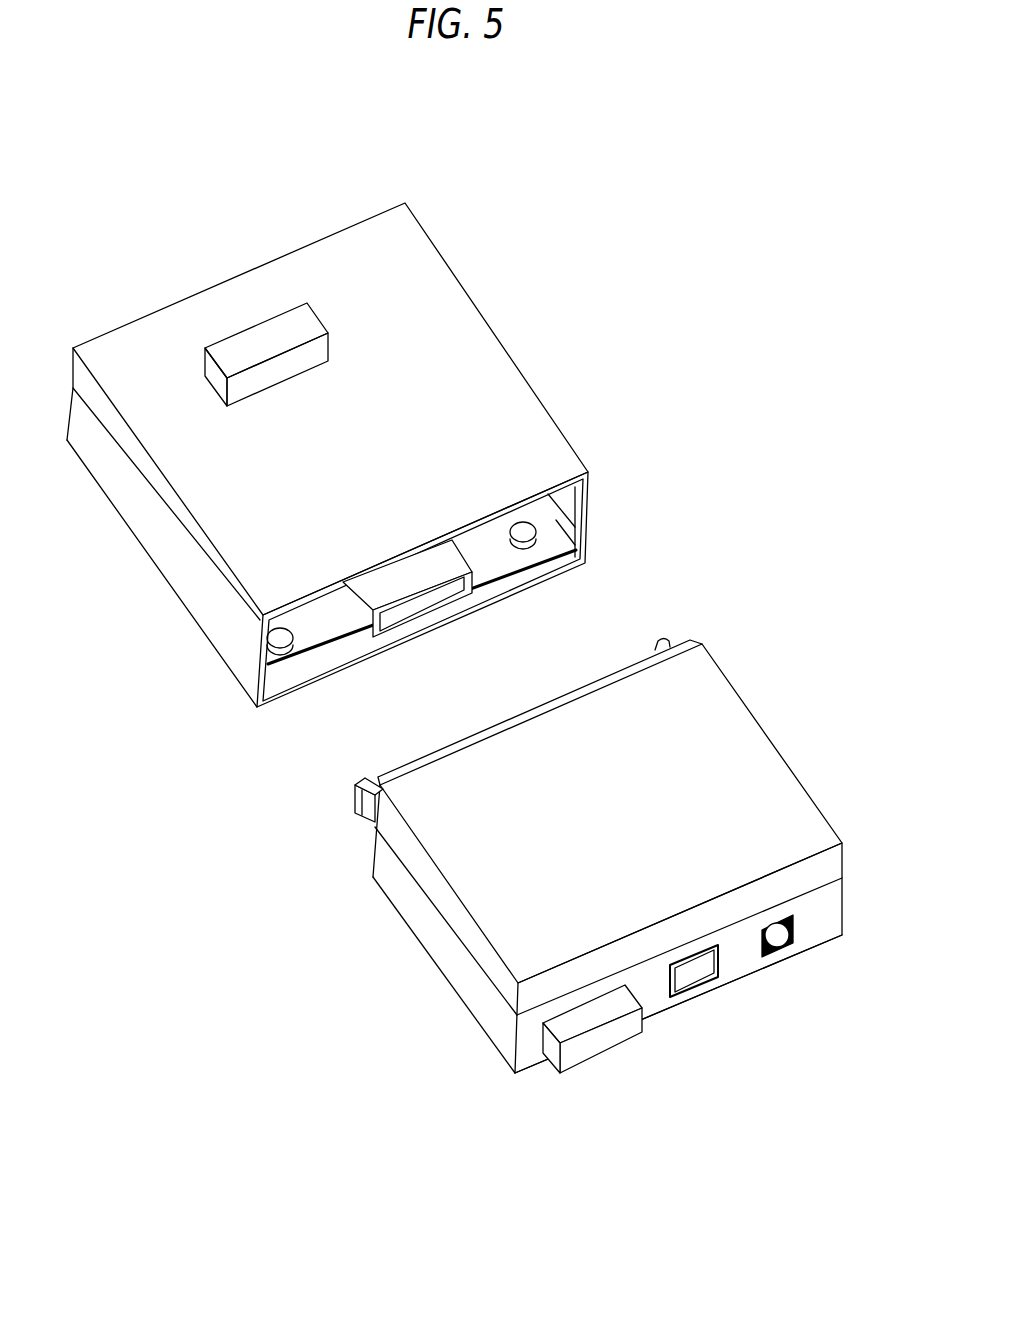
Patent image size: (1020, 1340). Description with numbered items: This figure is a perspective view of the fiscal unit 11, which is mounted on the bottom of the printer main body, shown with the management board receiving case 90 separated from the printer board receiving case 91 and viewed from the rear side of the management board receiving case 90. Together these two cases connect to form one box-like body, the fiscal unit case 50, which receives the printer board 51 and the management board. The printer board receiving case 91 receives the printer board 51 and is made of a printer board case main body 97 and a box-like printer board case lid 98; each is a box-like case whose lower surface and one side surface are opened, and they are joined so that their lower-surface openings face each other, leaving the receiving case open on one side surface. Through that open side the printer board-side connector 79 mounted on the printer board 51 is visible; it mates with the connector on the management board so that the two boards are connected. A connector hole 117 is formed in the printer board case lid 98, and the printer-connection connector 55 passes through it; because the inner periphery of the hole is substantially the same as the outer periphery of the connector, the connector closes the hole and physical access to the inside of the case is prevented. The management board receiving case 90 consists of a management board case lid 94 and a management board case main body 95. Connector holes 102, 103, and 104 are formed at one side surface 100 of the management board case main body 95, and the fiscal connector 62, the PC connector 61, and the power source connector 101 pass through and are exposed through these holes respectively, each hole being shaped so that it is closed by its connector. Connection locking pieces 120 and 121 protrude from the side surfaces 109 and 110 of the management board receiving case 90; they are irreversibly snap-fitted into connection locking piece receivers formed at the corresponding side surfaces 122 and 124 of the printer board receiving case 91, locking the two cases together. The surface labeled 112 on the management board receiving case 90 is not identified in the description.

The fiscal unit 11 is at (503, 188).
The fiscal unit case 50 is at (747, 375).
The printer board receiving case 91 is at (513, 402).
The management board receiving case 90 is at (690, 710).
The printer-connection connector 55 is at (253, 318).
The connector hole 117 is at (290, 366).
The side surface 124 is at (580, 440).
The printer board case lid 98 is at (160, 490).
The printer board case main body 97 is at (185, 585).
The side surface 122 is at (238, 655).
The printer board 51 is at (308, 637).
The printer board-side connector 79 is at (412, 577).
The connection locking piece 121 is at (662, 640).
The side surface 110 is at (785, 765).
The side face 112 is at (450, 905).
The management board case lid 94 is at (430, 882).
The side surface 109 is at (445, 952).
The management board case main body 95 is at (493, 1015).
The connection locking piece 120 is at (356, 832).
The side surface 100 is at (822, 915).
The connector hole 102 is at (598, 998).
The connector hole 103 is at (710, 962).
The PC connector 61 is at (700, 998).
The connector hole 104 is at (778, 928).
The power source connector 101 is at (782, 957).
The fiscal connector 62 is at (607, 1058).